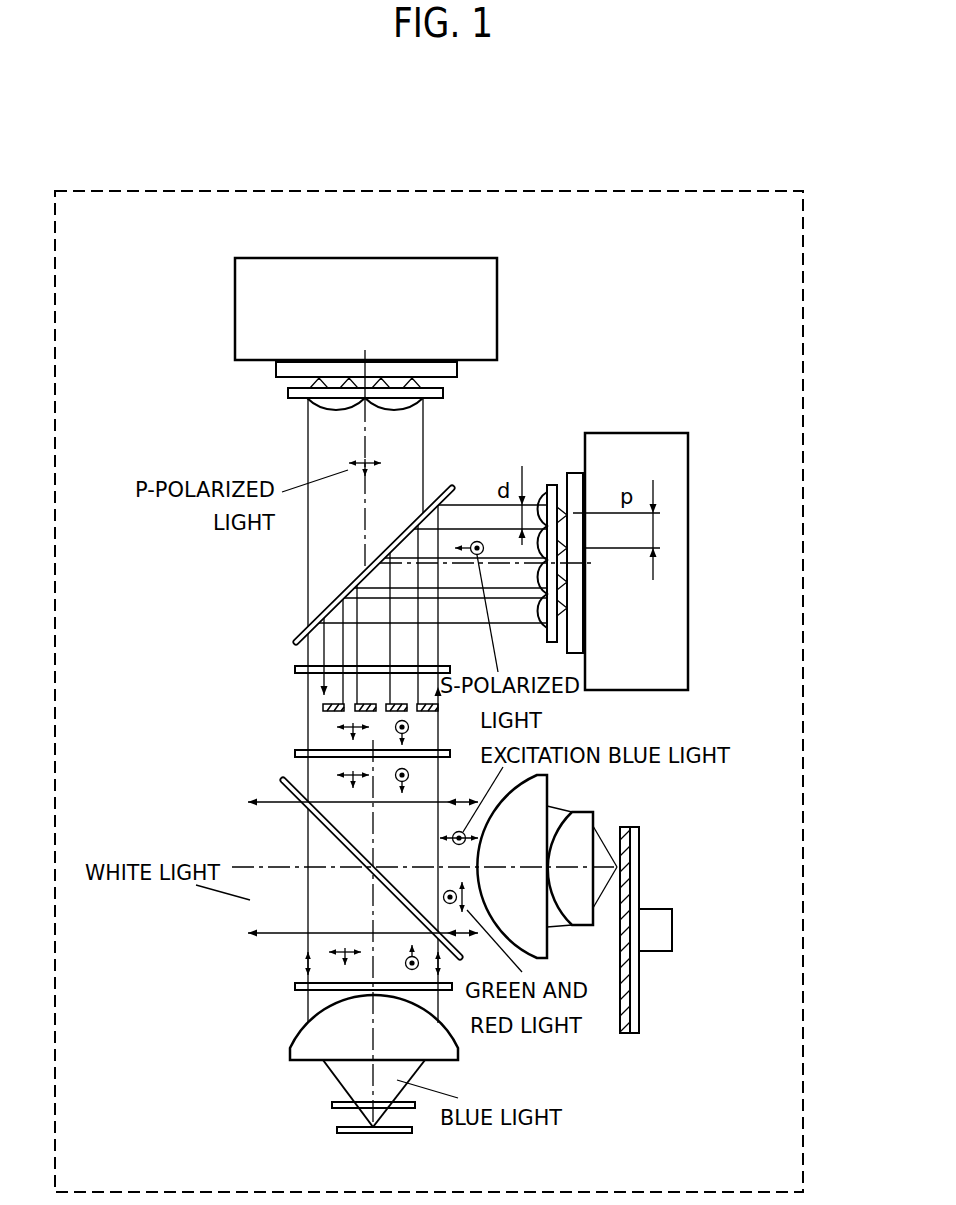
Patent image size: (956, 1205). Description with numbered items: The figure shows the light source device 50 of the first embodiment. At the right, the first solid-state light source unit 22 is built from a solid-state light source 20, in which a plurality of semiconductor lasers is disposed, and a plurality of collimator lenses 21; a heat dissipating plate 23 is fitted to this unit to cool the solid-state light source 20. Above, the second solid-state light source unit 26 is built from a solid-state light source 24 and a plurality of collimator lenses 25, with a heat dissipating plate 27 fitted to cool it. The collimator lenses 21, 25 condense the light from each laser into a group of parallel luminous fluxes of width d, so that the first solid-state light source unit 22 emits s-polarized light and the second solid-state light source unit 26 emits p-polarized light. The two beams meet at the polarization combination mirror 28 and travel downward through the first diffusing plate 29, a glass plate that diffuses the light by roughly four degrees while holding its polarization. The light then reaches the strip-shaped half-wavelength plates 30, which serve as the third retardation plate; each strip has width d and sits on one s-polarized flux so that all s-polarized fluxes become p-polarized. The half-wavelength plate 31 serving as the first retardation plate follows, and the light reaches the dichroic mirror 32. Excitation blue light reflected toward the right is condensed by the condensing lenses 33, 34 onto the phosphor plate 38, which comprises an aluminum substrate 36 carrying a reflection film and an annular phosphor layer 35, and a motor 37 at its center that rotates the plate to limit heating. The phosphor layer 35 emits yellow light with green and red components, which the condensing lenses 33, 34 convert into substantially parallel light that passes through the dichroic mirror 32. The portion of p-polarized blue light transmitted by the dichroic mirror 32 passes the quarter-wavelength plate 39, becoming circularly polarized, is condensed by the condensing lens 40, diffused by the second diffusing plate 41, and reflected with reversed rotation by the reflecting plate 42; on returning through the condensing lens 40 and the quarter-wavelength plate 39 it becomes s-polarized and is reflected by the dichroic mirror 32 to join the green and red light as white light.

The solid-state light source 20 is at (568, 472).
The collimator lenses 21 is at (548, 485).
The first solid-state light source unit 22 is at (541, 505).
The heat dissipating plate 23 is at (662, 432).
The solid-state light source 24 is at (276, 373).
The collimator lenses 25 is at (288, 397).
The second solid-state light source unit 26 is at (282, 387).
The heat dissipating plate 27 is at (497, 289).
The polarization combination mirror 28 is at (296, 638).
The first diffusing plate 29 is at (295, 668).
The half-wavelength plates 30 is at (323, 705).
The half-wavelength plate 31 is at (295, 752).
The dichroic mirror 32 is at (283, 780).
The condensing lens 33 is at (547, 795).
The condensing lens 34 is at (593, 813).
The phosphor layer 35 is at (622, 1033).
The aluminum substrate 36 is at (636, 1033).
The motor 37 is at (660, 951).
The phosphor plate 38 is at (686, 988).
The quarter-wavelength plate 39 is at (295, 985).
The condensing lens 40 is at (290, 1048).
The second diffusing plate 41 is at (332, 1103).
The reflecting plate 42 is at (337, 1128).
The light source device 50 is at (803, 557).